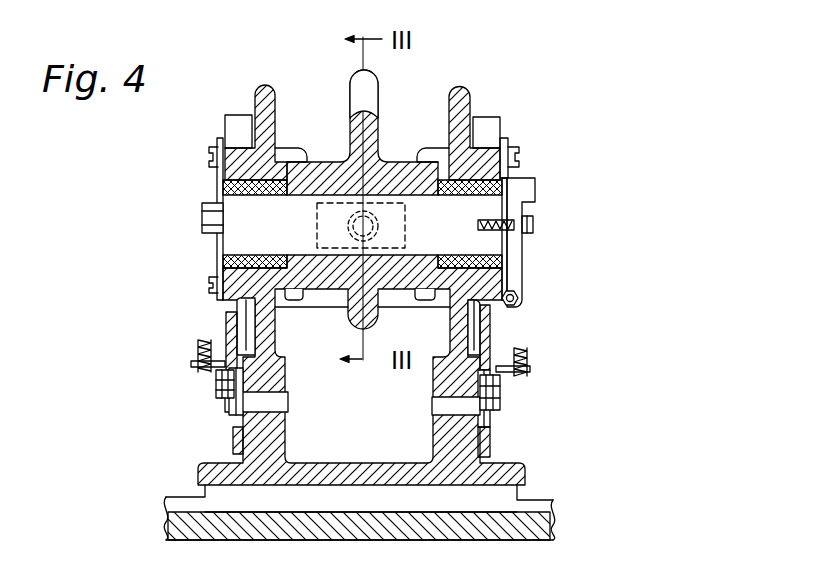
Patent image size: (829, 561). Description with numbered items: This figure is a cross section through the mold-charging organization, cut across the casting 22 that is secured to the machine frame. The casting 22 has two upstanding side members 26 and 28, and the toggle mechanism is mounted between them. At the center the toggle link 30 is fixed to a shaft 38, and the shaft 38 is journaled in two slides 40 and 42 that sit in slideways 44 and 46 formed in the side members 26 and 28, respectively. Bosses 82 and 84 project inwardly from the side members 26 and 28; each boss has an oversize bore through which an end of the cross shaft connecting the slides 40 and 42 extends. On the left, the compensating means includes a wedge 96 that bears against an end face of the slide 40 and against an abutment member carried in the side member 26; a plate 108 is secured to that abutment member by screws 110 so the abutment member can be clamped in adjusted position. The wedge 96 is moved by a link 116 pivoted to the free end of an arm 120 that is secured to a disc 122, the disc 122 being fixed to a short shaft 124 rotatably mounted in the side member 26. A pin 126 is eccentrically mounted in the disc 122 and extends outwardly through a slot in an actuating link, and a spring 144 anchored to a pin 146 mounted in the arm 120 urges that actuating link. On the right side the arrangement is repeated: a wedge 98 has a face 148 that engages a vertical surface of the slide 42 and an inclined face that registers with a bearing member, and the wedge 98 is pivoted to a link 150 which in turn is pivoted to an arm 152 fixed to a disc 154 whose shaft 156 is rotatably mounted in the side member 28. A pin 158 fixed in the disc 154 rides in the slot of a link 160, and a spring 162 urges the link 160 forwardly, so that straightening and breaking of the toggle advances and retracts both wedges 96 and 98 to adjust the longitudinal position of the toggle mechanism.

The casting 22 is at (363, 462).
The side member 26 is at (266, 77).
The side member 28 is at (468, 78).
The toggle link 30 is at (376, 100).
The shaft 38 is at (488, 247).
The slide 40 is at (254, 254).
The slide 42 is at (456, 254).
The slideway 44 is at (222, 262).
The slideway 46 is at (487, 259).
The boss 82 is at (292, 301).
The boss 84 is at (424, 301).
The wedge 96 is at (229, 124).
The wedge 98 is at (507, 136).
The plate 108 is at (222, 183).
The screws 110 is at (209, 152).
The link 116 is at (230, 318).
The arm 120 is at (233, 412).
The disc 122 is at (238, 432).
The shaft 124 is at (285, 404).
The pin 126 is at (222, 383).
The spring 144 is at (199, 351).
The pin 146 is at (197, 365).
The face 148 is at (486, 122).
The link 150 is at (509, 318).
The arm 152 is at (490, 441).
The disc 154 is at (492, 426).
The shaft 156 is at (438, 409).
The pin 158 is at (504, 401).
The link 160 is at (495, 317).
The spring 162 is at (528, 359).